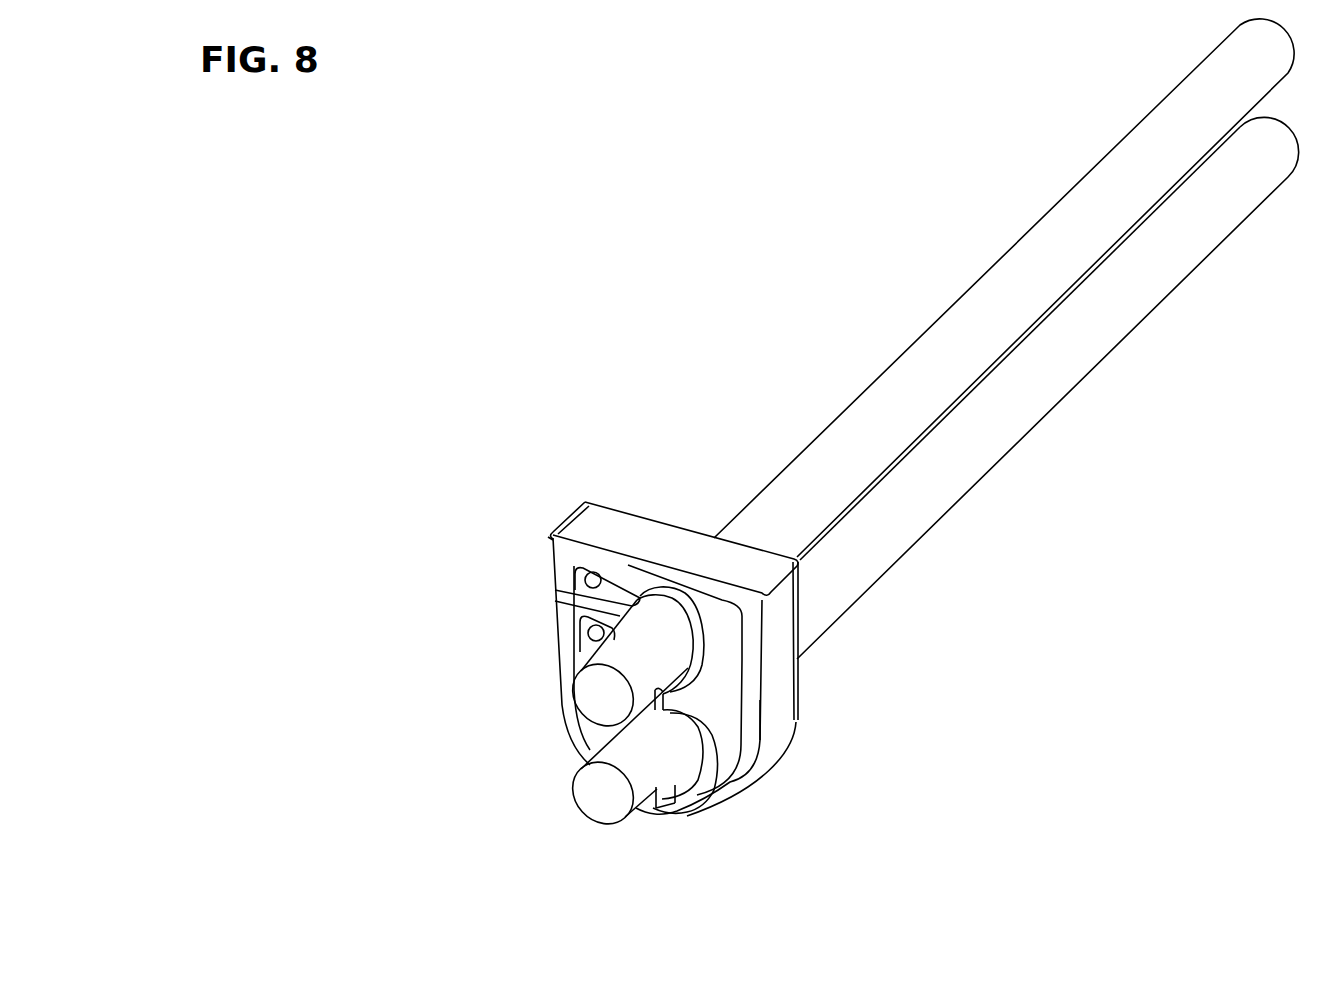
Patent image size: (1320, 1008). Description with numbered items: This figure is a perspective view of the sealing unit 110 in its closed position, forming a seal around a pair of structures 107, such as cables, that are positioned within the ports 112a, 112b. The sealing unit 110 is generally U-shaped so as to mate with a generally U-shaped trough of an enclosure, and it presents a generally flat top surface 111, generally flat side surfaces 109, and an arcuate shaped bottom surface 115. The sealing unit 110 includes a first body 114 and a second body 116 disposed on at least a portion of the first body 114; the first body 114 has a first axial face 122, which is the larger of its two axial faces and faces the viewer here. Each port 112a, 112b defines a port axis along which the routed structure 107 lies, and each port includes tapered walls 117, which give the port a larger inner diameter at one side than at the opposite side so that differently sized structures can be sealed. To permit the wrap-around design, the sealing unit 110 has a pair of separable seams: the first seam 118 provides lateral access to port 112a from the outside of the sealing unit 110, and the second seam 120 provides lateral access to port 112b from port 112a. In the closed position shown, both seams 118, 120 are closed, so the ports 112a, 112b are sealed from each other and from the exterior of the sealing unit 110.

The structures 107 is at (957, 328).
The side surfaces 109 is at (562, 693).
The sealing unit 110 is at (742, 806).
The top surface 111 is at (633, 532).
The port 112a is at (712, 652).
The port 112b is at (682, 773).
The first body 114 is at (705, 606).
The bottom surface 115 is at (660, 830).
The second body 116 is at (642, 598).
The tapered walls 117 is at (688, 750).
The first seam 118 is at (582, 610).
The second seam 120 is at (667, 702).
The first axial face 122 is at (723, 632).